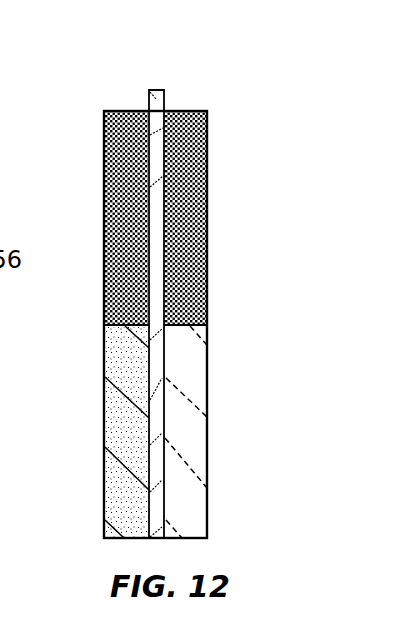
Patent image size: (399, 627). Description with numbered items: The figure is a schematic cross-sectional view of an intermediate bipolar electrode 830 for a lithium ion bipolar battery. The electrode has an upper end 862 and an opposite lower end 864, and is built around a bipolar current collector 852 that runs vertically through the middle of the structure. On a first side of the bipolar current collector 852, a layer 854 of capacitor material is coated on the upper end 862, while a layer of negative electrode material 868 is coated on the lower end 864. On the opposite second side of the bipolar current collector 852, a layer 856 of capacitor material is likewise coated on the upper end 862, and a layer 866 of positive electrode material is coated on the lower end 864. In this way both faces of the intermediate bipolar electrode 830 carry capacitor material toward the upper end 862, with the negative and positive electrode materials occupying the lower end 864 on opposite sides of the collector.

The intermediate bipolar electrode 830 is at (237, 92).
The bipolar current collector 852 is at (157, 88).
The layer of capacitor material 854 is at (104, 186).
The layer of capacitor material 856 is at (209, 252).
The upper end 862 is at (105, 100).
The lower end 864 is at (96, 525).
The layer of positive electrode material 866 is at (208, 441).
The layer of negative electrode material 868 is at (105, 432).